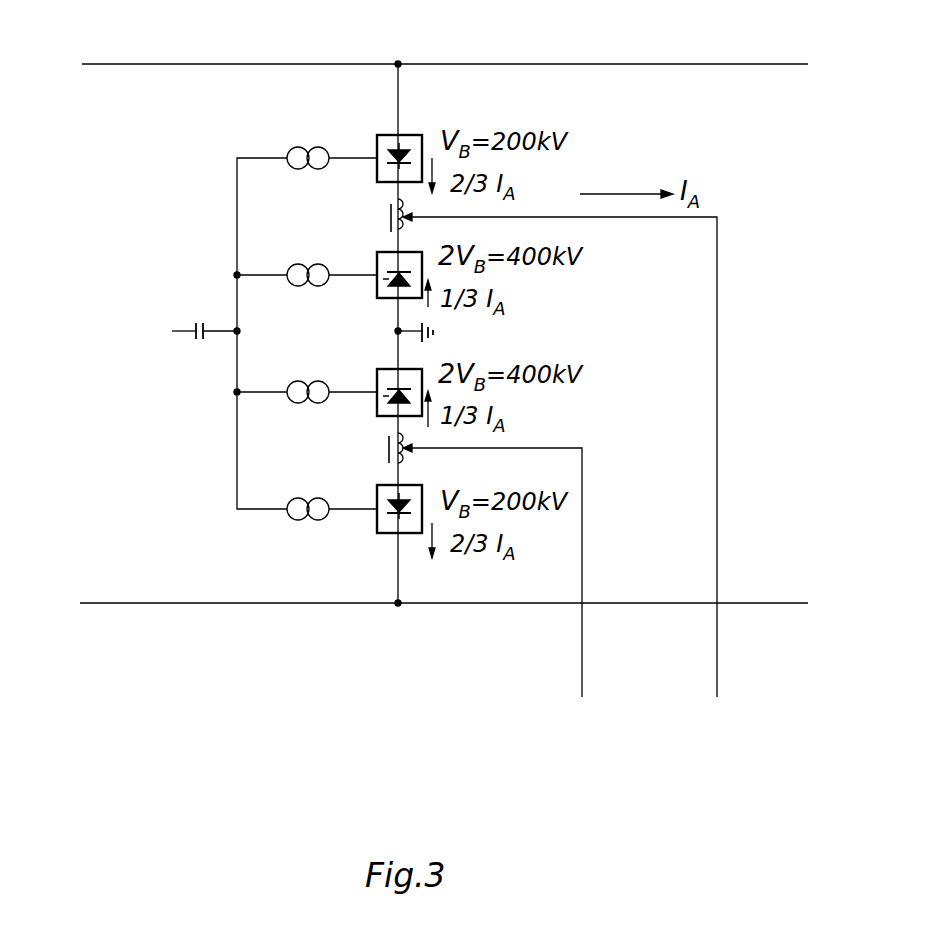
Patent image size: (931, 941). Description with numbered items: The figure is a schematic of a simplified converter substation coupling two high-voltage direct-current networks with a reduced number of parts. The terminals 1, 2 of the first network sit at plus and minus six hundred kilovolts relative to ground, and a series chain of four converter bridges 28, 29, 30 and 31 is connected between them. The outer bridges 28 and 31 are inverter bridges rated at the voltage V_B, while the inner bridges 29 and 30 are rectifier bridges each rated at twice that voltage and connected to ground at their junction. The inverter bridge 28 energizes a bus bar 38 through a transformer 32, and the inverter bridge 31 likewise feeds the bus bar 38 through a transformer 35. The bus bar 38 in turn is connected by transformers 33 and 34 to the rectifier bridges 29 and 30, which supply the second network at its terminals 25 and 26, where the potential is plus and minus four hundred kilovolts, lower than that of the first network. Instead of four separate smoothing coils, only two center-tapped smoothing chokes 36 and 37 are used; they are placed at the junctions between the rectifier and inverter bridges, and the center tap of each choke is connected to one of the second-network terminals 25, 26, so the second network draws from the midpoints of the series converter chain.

The terminal 1 is at (188, 63).
The terminal 2 is at (200, 604).
The terminal 25 is at (585, 678).
The terminal 26 is at (718, 677).
The inverter bridge 28 is at (390, 135).
The rectifier bridge 29 is at (390, 252).
The rectifier bridge 30 is at (387, 369).
The inverter bridge 31 is at (386, 485).
The transformer 32 is at (317, 146).
The transformer 33 is at (317, 263).
The transformer 34 is at (317, 380).
The transformer 35 is at (317, 497).
The center-tapped smoothing choke 36 is at (403, 460).
The center-tapped smoothing choke 37 is at (404, 229).
The bus bar 38 is at (237, 234).